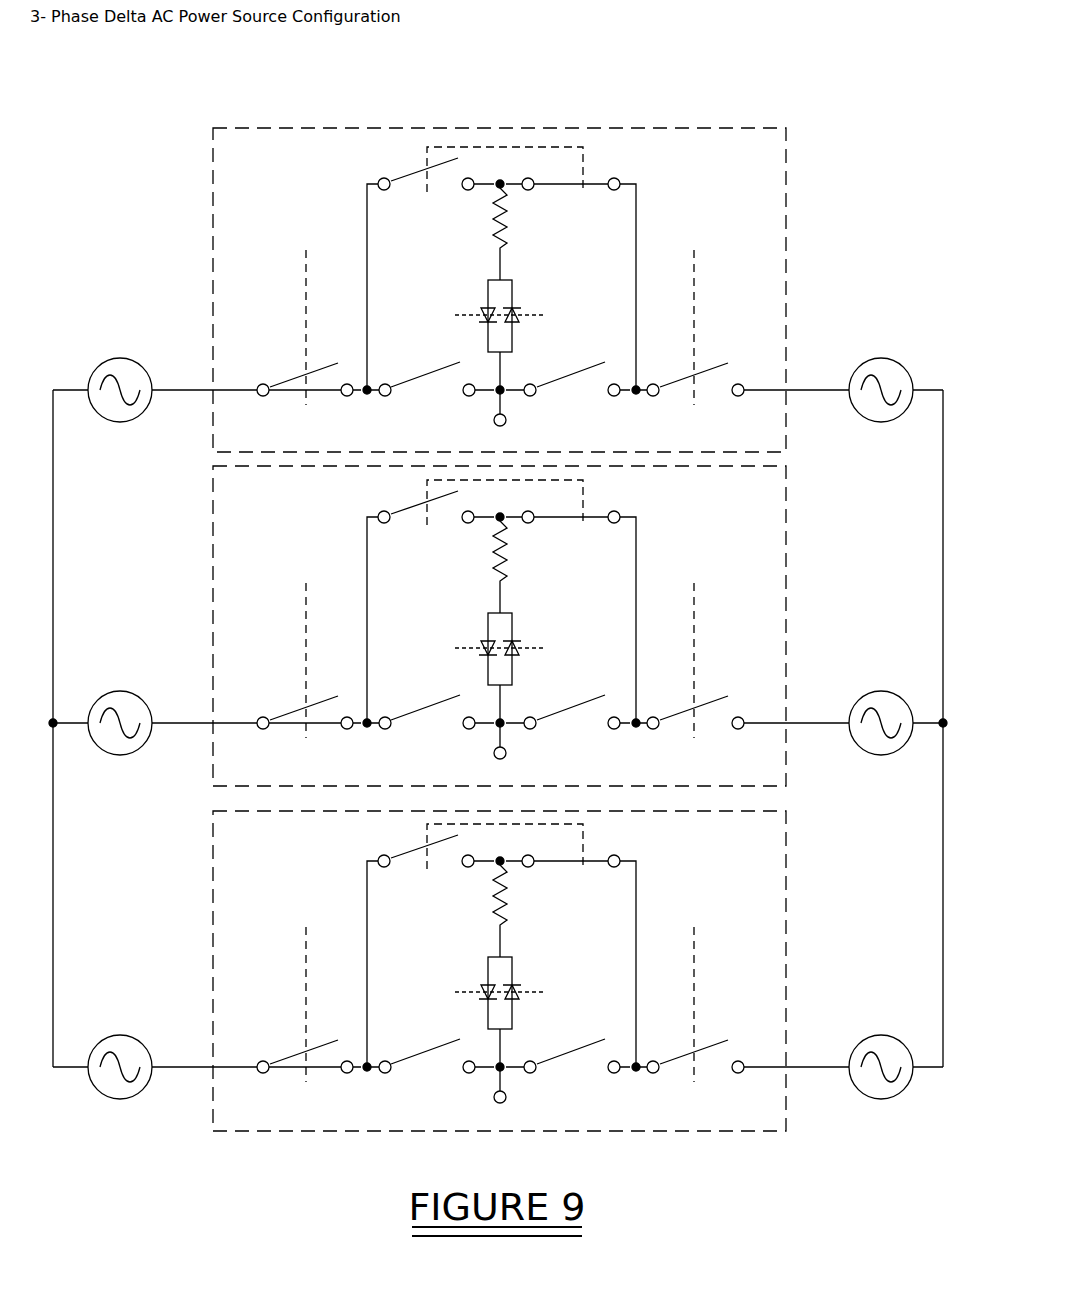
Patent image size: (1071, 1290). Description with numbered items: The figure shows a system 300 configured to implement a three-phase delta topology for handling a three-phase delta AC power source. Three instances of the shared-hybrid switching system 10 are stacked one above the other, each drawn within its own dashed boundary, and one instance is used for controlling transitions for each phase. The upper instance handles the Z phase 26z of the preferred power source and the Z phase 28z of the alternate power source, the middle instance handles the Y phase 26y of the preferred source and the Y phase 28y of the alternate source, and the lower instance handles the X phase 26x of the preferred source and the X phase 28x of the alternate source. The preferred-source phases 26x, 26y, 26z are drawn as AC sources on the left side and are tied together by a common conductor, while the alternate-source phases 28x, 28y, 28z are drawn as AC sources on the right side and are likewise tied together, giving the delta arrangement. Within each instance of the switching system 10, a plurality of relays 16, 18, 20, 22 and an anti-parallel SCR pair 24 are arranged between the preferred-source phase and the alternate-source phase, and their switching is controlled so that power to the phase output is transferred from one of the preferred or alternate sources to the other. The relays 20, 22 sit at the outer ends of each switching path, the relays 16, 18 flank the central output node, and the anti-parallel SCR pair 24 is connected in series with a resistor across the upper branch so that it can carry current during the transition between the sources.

The system 300 is at (152, 176).
The shared-hybrid switching system 10 is at (213, 270).
The relay 16 is at (421, 378).
The relay 18 is at (580, 378).
The relay 20 is at (296, 384).
The relay 22 is at (700, 372).
The anti-parallel SCR pair 24 is at (520, 297).
The Z phase of preferred power source 26z is at (118, 423).
The Y phase of preferred power source 26y is at (118, 756).
The X phase of preferred power source 26x is at (118, 1100).
The Z phase of alternate power source 28z is at (883, 423).
The Y phase of alternate power source 28y is at (883, 756).
The X phase of alternate power source 28x is at (883, 1100).